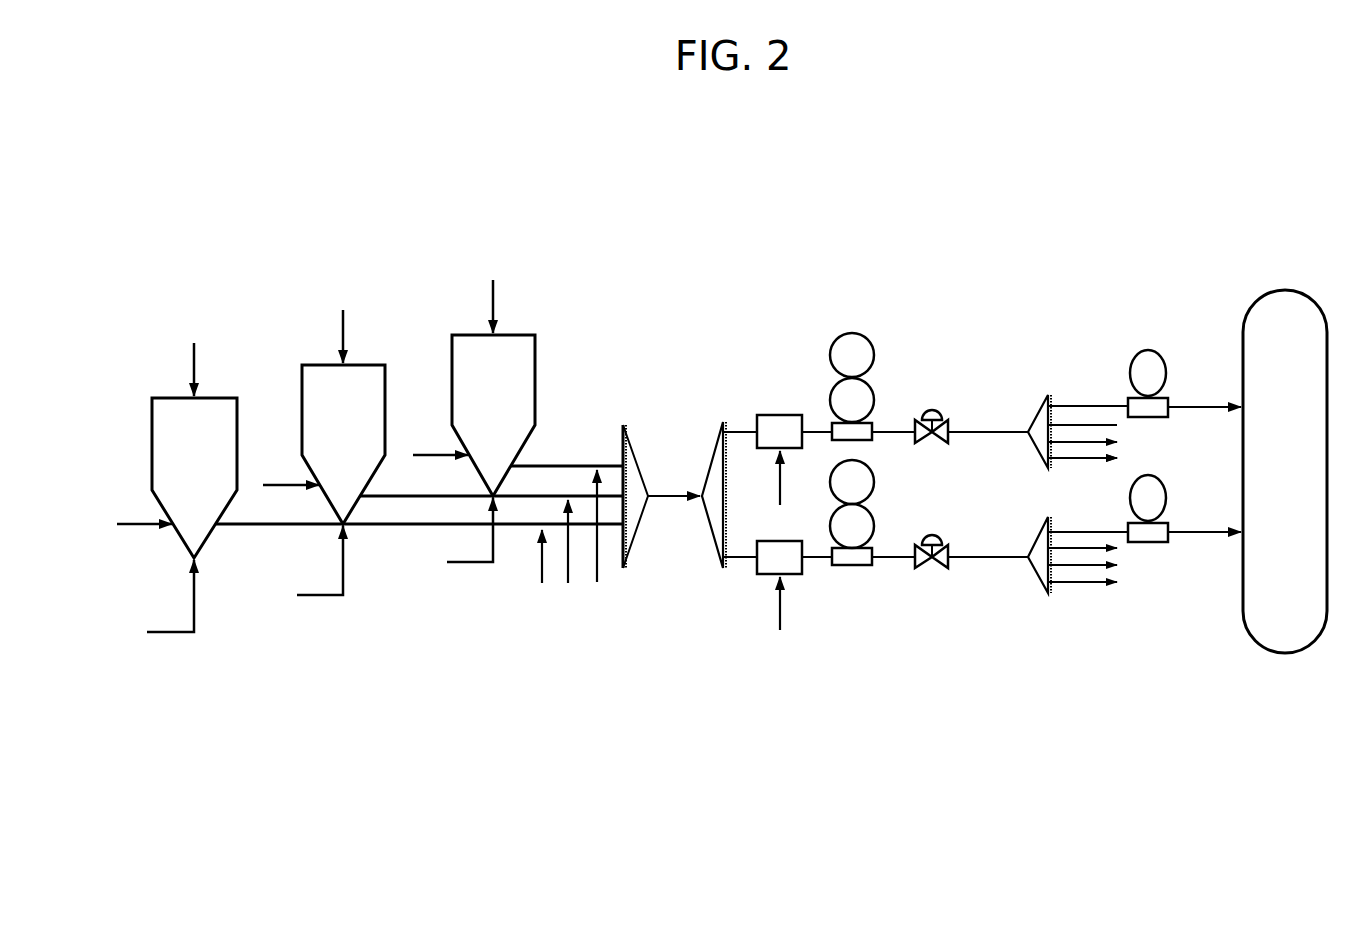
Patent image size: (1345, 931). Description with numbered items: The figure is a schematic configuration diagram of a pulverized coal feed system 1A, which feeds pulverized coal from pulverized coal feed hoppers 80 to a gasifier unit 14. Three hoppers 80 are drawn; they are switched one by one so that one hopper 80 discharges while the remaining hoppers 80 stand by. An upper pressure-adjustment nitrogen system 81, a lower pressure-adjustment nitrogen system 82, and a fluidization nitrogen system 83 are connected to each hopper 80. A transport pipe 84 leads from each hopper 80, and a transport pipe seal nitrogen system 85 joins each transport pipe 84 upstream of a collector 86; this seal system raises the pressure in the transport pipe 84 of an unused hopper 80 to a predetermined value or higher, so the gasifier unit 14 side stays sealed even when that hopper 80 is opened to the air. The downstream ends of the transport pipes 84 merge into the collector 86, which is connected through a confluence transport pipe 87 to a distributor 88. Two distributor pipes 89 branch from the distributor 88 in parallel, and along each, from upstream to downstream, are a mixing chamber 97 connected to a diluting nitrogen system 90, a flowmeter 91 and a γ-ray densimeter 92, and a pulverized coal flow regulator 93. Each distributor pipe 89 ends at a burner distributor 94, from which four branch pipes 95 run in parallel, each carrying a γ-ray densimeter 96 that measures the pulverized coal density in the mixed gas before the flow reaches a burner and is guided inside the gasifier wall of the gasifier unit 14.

The pulverized coal feed system 1A is at (749, 268).
The gasifier unit 14 is at (1240, 298).
The pulverized coal feed hopper 80 is at (232, 396).
The upper pressure-adjustment nitrogen system 81 is at (192, 350).
The lower pressure-adjustment nitrogen system 82 is at (122, 522).
The fluidization nitrogen system 83 is at (153, 630).
The transport pipe 84 is at (238, 528).
The transport pipe seal nitrogen system 85 is at (541, 586).
The collector 86 is at (628, 424).
The confluence transport pipe 87 is at (668, 493).
The distributor 88 is at (718, 434).
The distributor pipe 89 is at (740, 429).
The diluting nitrogen system 90 is at (783, 482).
The flowmeter 91 is at (872, 390).
The γ-ray densimeter 92 is at (871, 335).
The pulverized coal flow regulator 93 is at (936, 408).
The burner distributor 94 is at (1040, 398).
The branch pipe 95 is at (1094, 403).
The γ-ray densimeter 96 is at (1148, 349).
The mixing chamber 97 is at (779, 413).